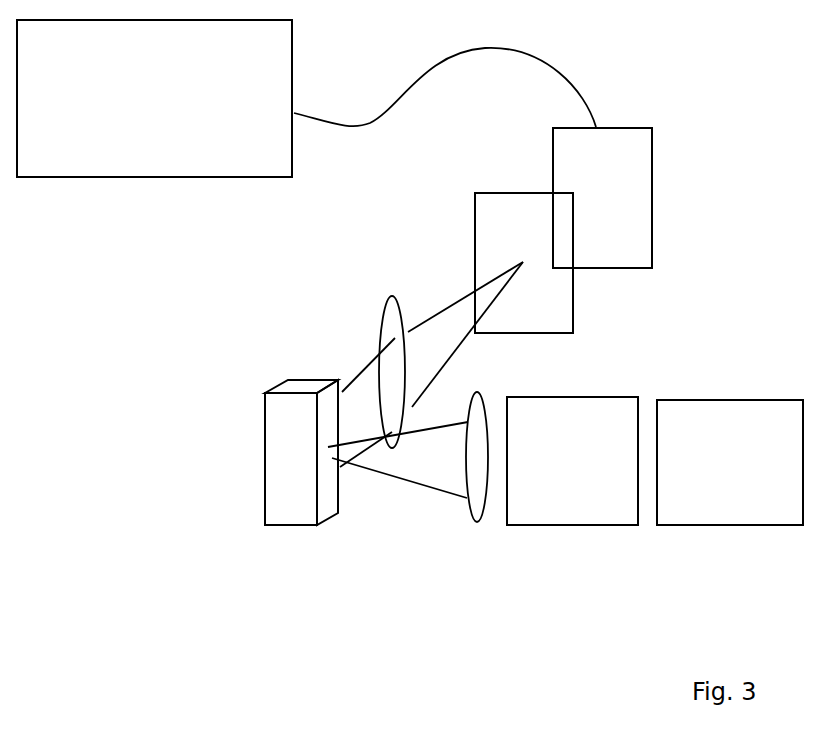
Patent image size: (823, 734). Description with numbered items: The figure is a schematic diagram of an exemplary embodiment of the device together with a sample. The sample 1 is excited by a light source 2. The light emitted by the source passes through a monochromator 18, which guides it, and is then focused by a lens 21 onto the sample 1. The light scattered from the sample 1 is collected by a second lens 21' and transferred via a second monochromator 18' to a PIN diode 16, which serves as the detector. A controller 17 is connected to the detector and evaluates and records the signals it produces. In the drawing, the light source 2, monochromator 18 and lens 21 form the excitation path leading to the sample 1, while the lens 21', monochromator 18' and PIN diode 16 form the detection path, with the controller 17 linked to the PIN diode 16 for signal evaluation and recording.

The sample 1 is at (301, 452).
The light source 2 is at (730, 462).
The PIN diode 16 is at (602, 198).
The controller 17 is at (154, 98).
The monochromator 18 is at (572, 461).
The monochromator 18' is at (524, 263).
The lens 21 is at (461, 492).
The lens 21' is at (351, 366).